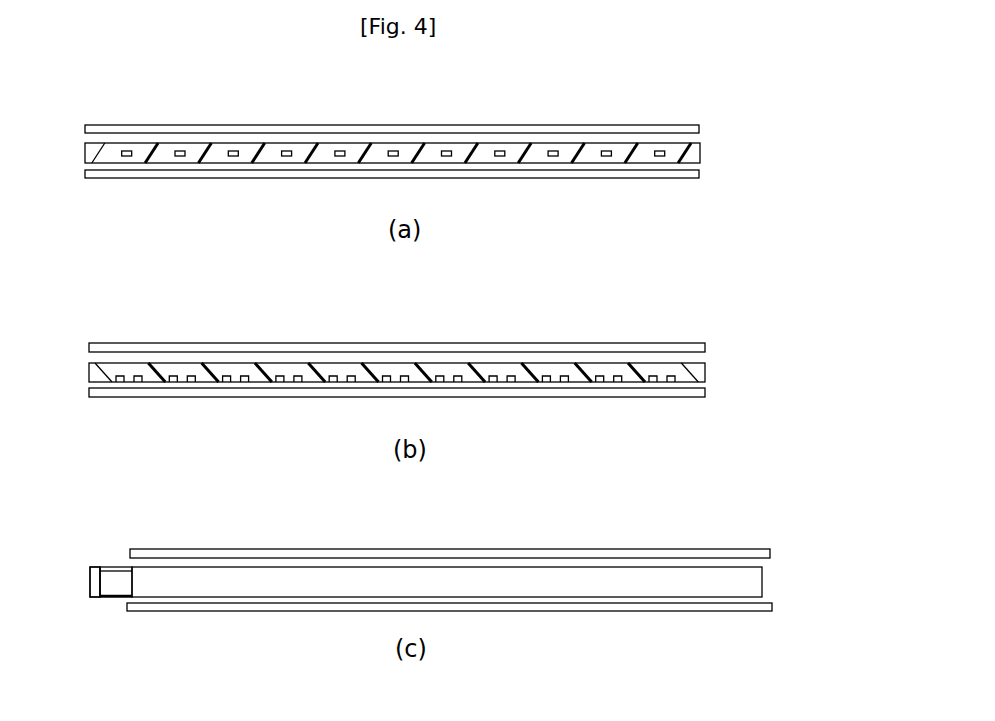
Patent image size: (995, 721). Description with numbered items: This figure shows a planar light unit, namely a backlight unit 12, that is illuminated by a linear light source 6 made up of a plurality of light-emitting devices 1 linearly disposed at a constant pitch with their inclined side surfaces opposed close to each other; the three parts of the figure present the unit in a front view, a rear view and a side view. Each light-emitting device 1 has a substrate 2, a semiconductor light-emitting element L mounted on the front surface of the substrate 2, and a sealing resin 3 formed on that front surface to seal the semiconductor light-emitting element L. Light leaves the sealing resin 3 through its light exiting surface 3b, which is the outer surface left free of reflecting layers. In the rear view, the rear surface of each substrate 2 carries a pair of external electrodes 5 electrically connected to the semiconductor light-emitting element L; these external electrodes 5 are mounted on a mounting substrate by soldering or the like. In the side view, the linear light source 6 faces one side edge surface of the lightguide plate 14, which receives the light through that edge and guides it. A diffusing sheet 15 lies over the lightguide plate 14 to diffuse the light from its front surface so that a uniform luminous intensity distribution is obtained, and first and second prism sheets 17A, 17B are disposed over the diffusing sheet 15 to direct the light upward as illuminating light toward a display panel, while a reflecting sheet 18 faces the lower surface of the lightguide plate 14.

The light-emitting device 1 is at (128, 141).
The substrate 2 is at (88, 582).
The sealing resin 3 is at (115, 587).
The light exiting surface 3b is at (393, 146).
The external electrodes 5 is at (546, 382).
The linear light source 6 is at (703, 140).
The backlight unit 12 is at (467, 526).
The lightguide plate 14 is at (738, 567).
The diffusing sheet 15 is at (427, 321).
The first prism sheet 17A is at (427, 321).
The second prism sheet 17B is at (292, 125).
The reflecting sheet 18 is at (358, 178).
The semiconductor light-emitting element L is at (553, 157).